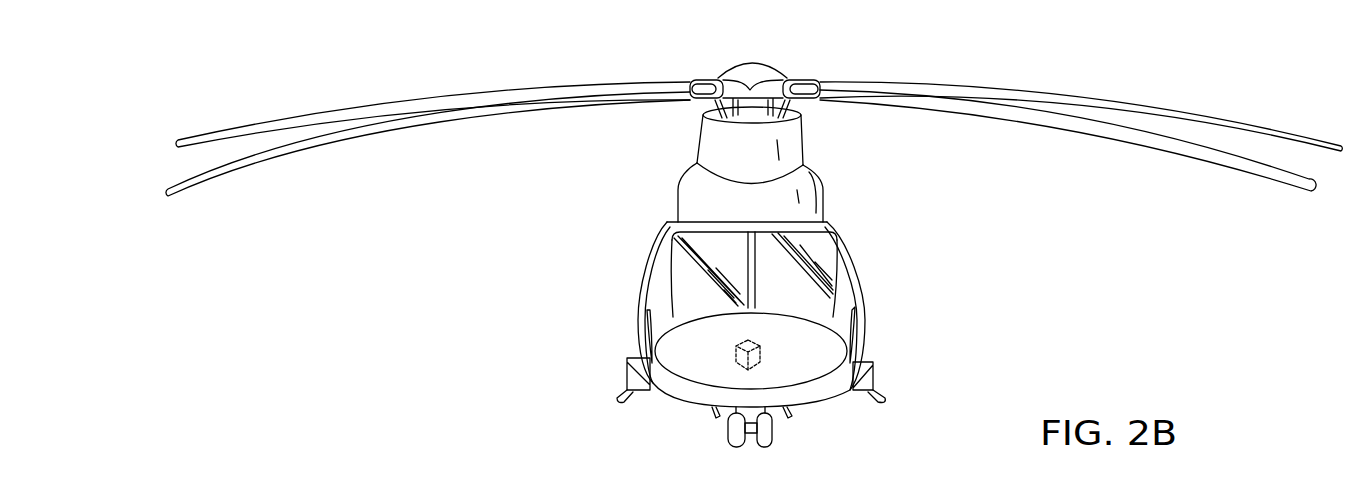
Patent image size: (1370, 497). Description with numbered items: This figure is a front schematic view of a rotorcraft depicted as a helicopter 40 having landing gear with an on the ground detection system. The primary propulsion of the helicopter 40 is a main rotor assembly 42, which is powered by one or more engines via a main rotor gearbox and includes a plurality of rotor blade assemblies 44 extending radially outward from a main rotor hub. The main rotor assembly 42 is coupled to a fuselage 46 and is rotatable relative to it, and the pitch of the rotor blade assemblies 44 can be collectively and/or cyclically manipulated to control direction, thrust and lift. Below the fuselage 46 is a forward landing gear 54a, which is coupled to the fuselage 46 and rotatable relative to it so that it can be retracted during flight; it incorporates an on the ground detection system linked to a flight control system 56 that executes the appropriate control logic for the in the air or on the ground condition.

The helicopter 40 is at (791, 331).
The main rotor assembly 42 is at (739, 57).
The rotor blade assemblies 44 is at (447, 94).
The fuselage 46 is at (824, 405).
The forward landing gear 54a is at (728, 430).
The flight control system 56 is at (733, 350).